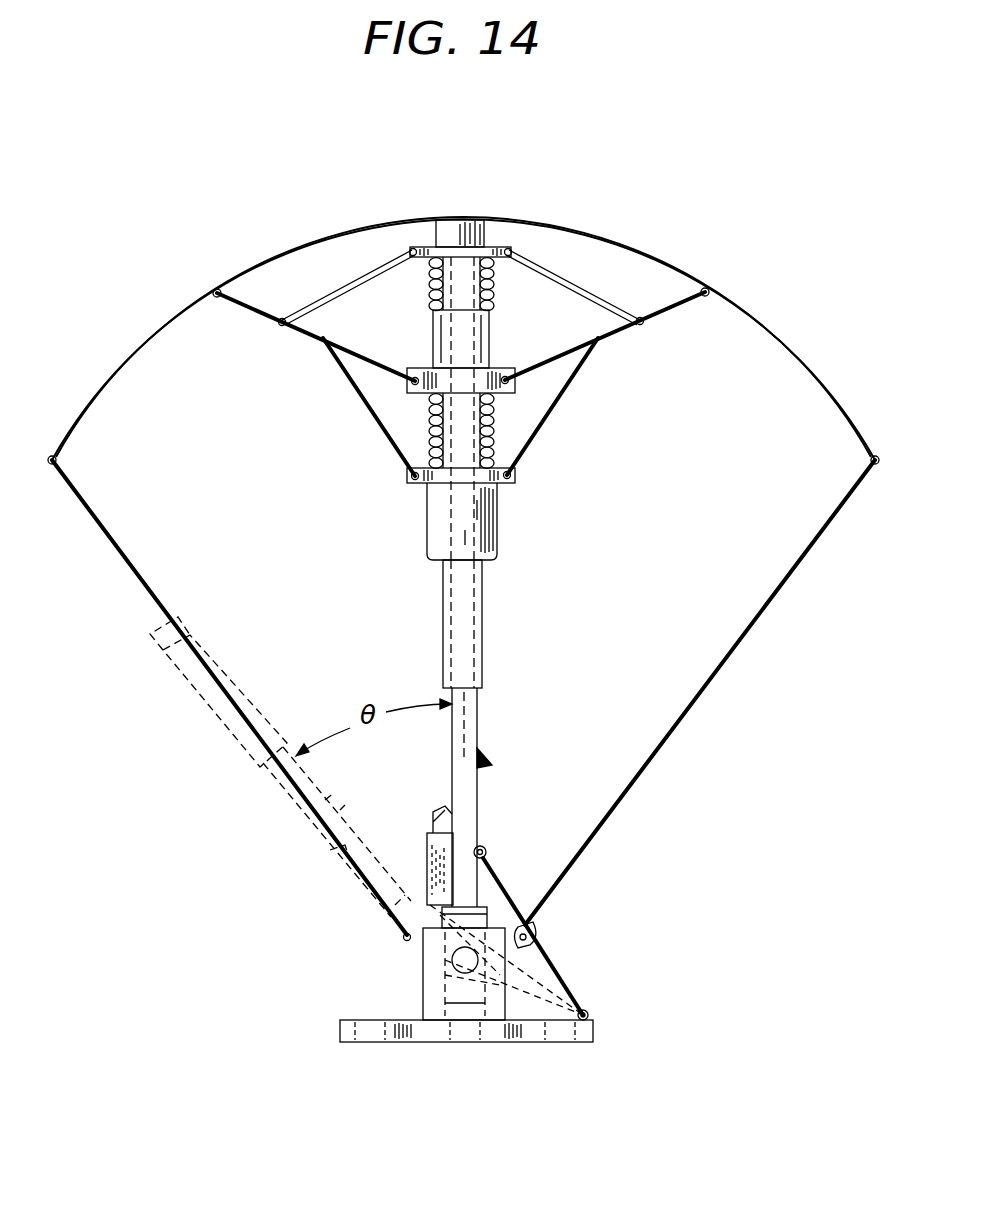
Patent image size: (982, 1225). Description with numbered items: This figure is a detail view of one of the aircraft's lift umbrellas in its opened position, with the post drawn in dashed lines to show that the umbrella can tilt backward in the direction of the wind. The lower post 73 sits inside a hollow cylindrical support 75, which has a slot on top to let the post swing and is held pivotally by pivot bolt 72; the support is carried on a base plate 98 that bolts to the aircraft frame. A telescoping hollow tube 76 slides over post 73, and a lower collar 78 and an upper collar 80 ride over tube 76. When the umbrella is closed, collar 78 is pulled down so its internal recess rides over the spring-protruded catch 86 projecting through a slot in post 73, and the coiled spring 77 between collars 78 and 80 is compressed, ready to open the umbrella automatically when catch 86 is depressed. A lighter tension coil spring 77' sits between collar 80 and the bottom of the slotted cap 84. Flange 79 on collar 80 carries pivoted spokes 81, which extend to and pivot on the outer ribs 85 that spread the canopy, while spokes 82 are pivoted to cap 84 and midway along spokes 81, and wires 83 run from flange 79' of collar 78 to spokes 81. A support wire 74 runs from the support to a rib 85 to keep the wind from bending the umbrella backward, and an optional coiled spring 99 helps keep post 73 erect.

The pivot bolt 72 is at (505, 992).
The lower post 73 is at (478, 706).
The umbrella support wire 74 is at (735, 667).
The hollow cylindrical support 75 is at (427, 993).
The telescoping hollow tube 76 is at (483, 620).
The coiled spring 77 is at (525, 430).
The tension coil spring 77' is at (483, 282).
The collar 78 is at (498, 532).
The flange 79 is at (401, 402).
The flange 79' is at (421, 489).
The collar 80 is at (490, 333).
The spoke 81 is at (305, 337).
The spoke 82 is at (568, 274).
The wire 83 is at (389, 437).
The cap 84 is at (466, 240).
The outer rib 85 is at (163, 319).
The catch 86 is at (490, 765).
The base plate 98 is at (358, 1020).
The coiled spring 99 is at (545, 960).